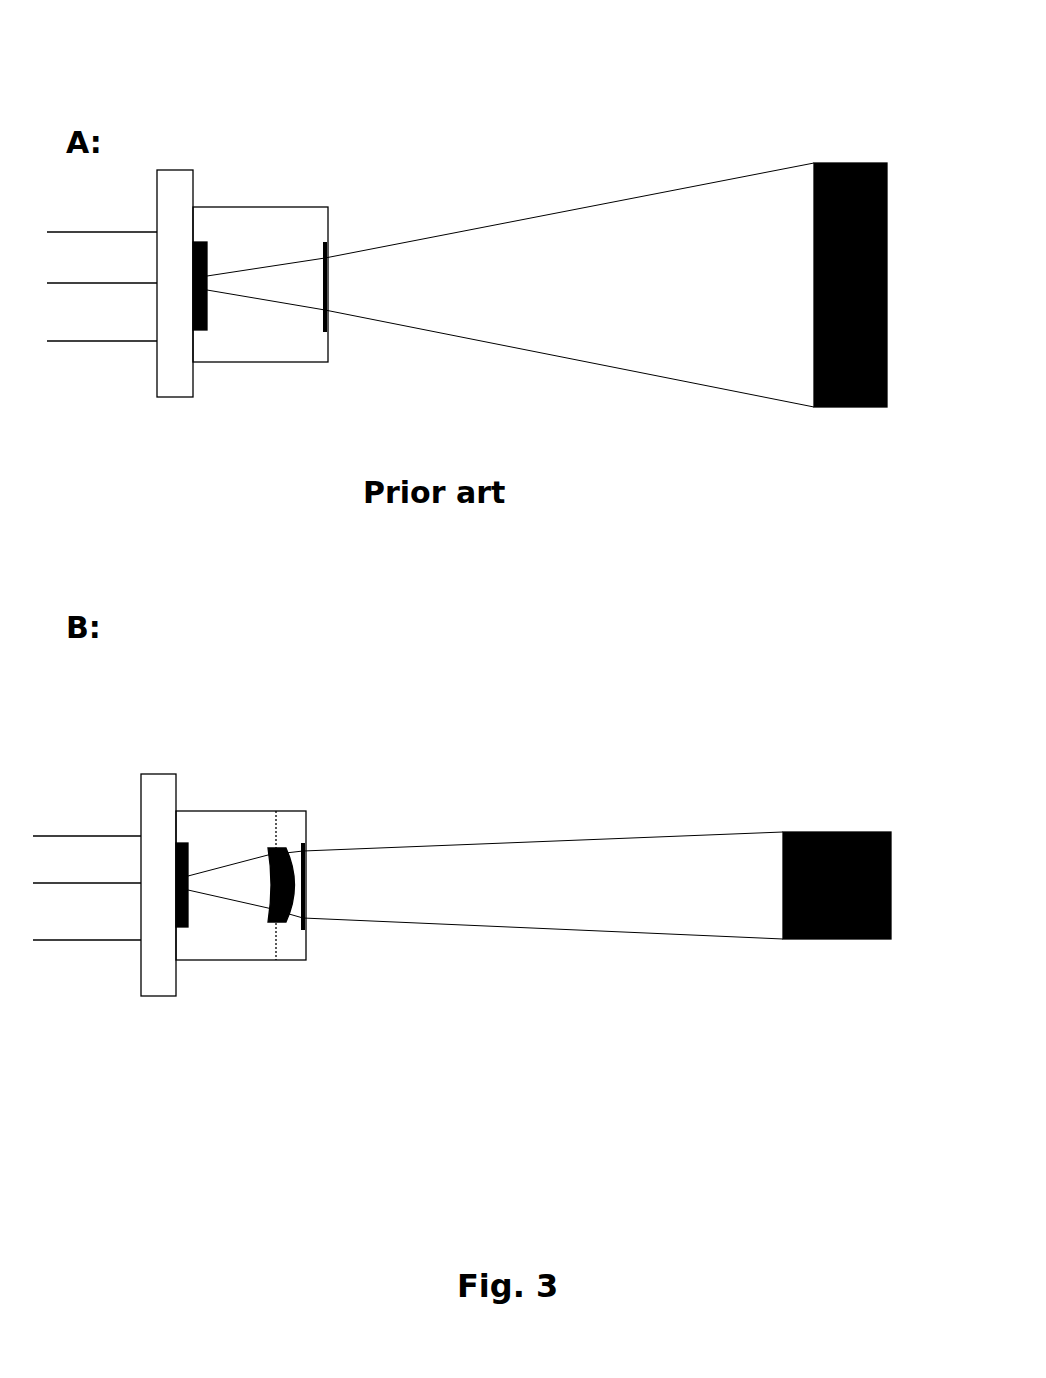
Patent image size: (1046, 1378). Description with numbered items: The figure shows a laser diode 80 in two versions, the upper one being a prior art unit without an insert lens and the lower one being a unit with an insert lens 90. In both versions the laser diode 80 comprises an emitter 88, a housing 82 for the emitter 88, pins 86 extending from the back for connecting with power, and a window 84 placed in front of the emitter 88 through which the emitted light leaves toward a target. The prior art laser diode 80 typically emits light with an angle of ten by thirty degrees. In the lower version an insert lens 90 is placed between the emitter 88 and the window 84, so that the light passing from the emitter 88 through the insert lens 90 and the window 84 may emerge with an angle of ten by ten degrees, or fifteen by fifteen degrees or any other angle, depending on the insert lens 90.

The laser diode 80 is at (243, 106).
The housing 82 is at (242, 362).
The window 84 is at (325, 258).
The pins 86 is at (82, 341).
The emitter 88 is at (207, 240).
The insert lens 90 is at (287, 925).